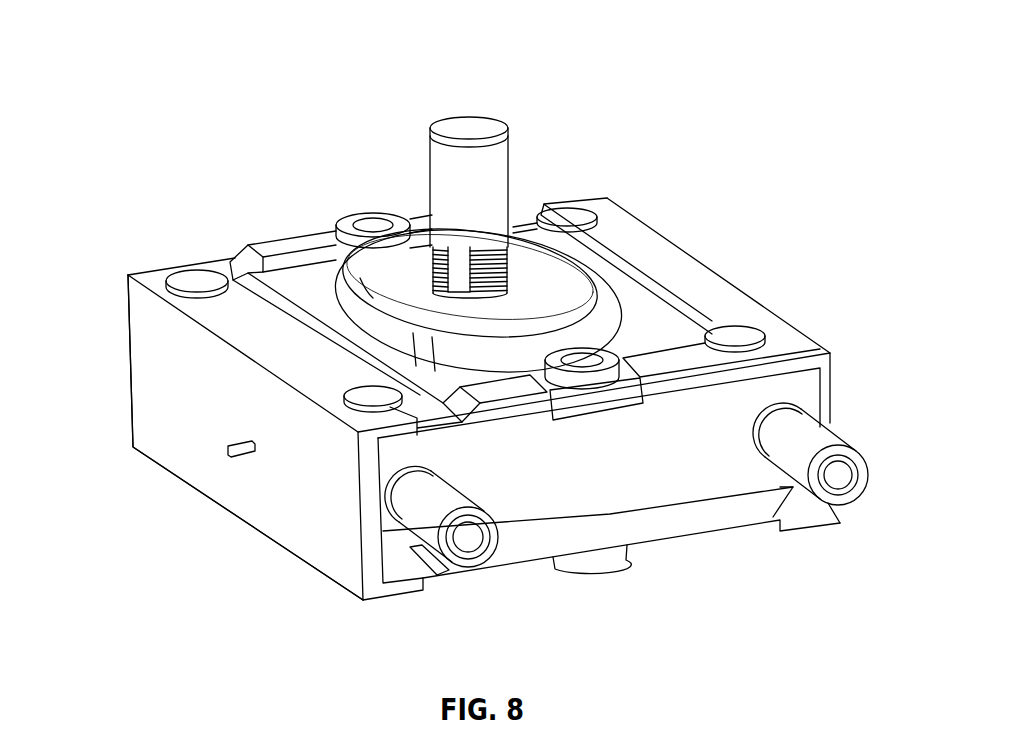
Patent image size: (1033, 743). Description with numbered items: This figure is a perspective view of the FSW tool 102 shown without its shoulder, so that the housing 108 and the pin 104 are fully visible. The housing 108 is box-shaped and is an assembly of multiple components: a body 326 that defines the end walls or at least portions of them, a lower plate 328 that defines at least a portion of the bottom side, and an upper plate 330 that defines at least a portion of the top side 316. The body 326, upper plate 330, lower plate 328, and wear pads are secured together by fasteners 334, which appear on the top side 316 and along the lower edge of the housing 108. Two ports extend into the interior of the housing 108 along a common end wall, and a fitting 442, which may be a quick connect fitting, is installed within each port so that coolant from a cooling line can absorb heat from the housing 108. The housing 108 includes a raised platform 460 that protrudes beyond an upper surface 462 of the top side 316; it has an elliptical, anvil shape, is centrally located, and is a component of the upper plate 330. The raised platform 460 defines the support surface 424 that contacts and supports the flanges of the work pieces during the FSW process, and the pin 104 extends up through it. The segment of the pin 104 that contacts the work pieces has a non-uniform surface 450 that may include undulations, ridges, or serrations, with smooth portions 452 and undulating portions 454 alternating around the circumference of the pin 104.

The FSW tool 102 is at (274, 96).
The pin 104 is at (455, 180).
The housing 108 is at (160, 282).
The top side 316 is at (622, 298).
The body 326 is at (533, 462).
The lower plate 328 is at (657, 520).
The upper plate 330 is at (338, 342).
The fasteners 334 is at (742, 334).
The support surface 424 is at (538, 283).
The fitting 442 is at (822, 442).
The non-uniform surface 450 is at (481, 242).
The smooth portions 452 is at (458, 262).
The undulating portions 454 is at (508, 252).
The raised platform 460 is at (333, 285).
The upper surface 462 is at (293, 287).